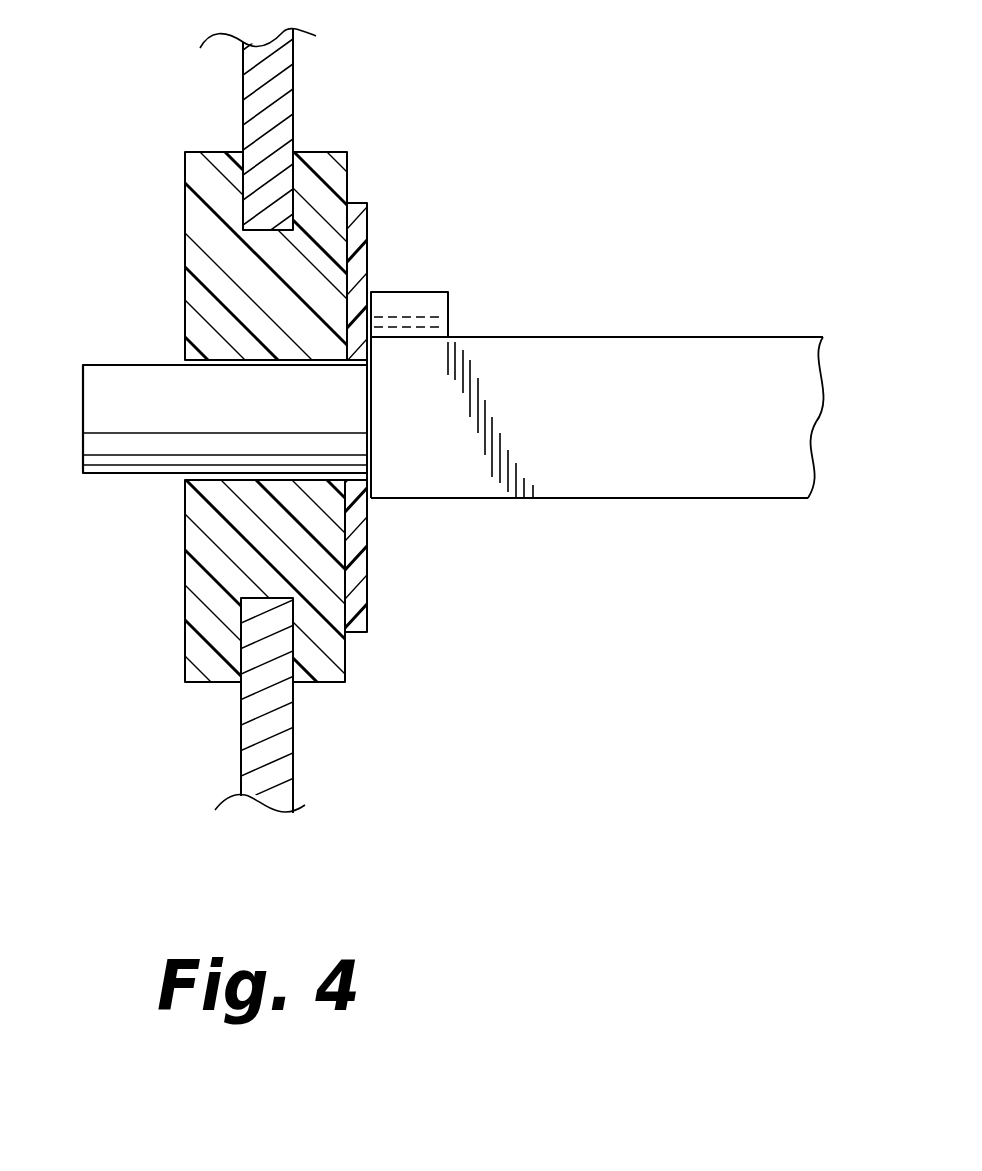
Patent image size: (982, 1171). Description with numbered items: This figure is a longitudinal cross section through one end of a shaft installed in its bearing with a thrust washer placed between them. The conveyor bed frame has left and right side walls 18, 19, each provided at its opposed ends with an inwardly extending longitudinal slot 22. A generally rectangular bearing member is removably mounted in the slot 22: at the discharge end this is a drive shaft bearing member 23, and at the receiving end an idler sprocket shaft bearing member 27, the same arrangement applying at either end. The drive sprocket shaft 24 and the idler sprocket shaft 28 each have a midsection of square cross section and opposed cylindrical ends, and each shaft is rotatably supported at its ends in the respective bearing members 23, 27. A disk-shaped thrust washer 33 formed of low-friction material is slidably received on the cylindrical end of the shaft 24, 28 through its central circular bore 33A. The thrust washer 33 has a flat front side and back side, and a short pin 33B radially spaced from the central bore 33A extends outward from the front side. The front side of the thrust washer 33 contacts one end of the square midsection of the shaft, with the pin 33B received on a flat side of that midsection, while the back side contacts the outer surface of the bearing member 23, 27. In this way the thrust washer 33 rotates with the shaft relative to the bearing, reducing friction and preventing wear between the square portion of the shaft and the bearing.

The left side wall 18 is at (223, 413).
The right side wall 19 is at (243, 102).
The longitudinal slot 22 is at (265, 241).
The drive shaft bearing member 23 is at (188, 581).
The idler sprocket shaft bearing member 27 is at (185, 552).
The drive sprocket shaft 24 is at (453, 417).
The idler sprocket shaft 28 is at (453, 417).
The thrust washer 33 is at (368, 568).
The central circular bore 33A is at (372, 385).
The pin 33B is at (405, 298).